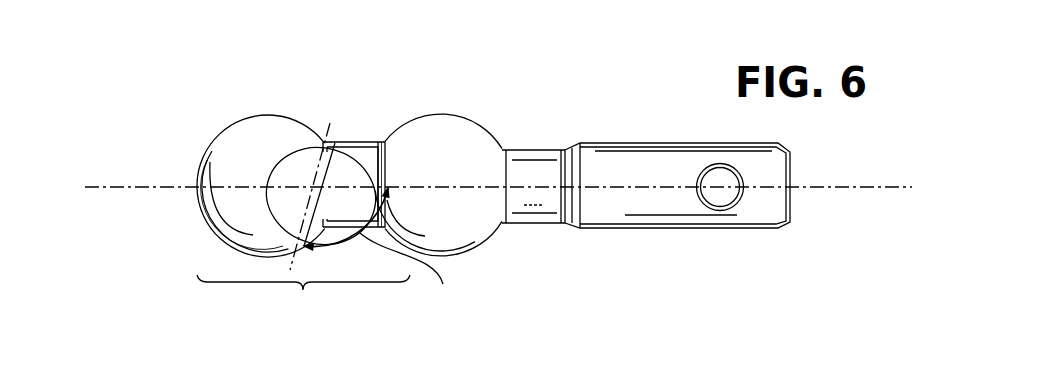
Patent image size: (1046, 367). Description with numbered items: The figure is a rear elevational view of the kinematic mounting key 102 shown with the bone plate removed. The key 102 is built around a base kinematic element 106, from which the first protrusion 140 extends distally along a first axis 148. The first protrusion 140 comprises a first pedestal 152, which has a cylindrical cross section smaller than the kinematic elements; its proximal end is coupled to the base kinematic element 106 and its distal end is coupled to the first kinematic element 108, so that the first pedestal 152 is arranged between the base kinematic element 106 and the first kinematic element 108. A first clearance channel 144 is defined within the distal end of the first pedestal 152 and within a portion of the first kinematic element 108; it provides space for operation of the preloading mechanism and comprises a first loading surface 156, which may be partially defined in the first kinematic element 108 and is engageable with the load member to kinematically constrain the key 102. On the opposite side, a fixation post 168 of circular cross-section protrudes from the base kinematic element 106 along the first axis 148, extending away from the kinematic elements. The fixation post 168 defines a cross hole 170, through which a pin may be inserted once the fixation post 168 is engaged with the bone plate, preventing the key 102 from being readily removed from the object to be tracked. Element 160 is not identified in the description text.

The kinematic mounting key 102 is at (158, 98).
The base kinematic element 106 is at (473, 228).
The first kinematic element 108 is at (240, 128).
The first protrusion 140 is at (303, 296).
The first clearance channel 144 is at (347, 142).
The first axis 148 is at (877, 187).
The first pedestal 152 is at (378, 143).
The first loading surface 156 is at (283, 177).
The ball surface 160 is at (190, 174).
The fixation post 168 is at (660, 143).
The cross hole 170 is at (720, 202).